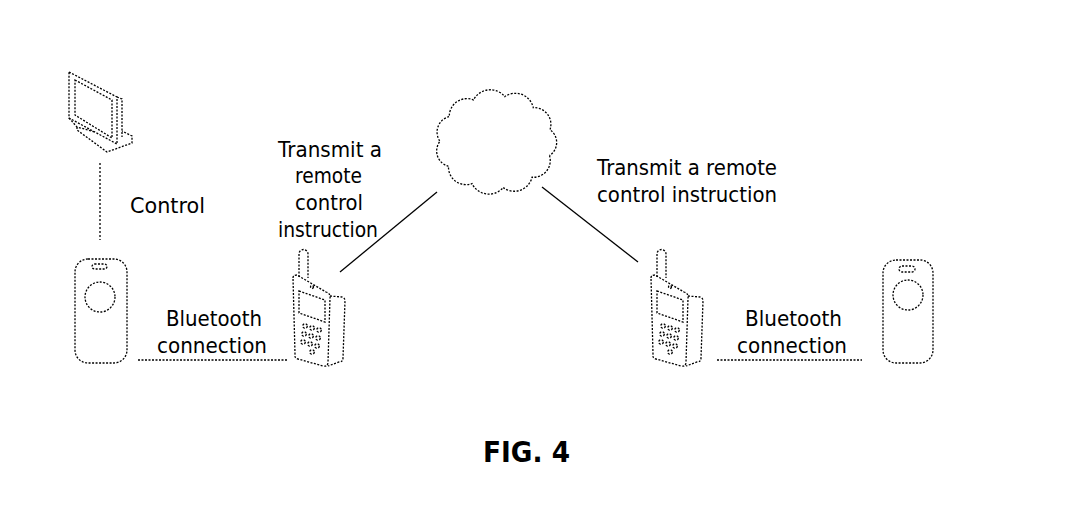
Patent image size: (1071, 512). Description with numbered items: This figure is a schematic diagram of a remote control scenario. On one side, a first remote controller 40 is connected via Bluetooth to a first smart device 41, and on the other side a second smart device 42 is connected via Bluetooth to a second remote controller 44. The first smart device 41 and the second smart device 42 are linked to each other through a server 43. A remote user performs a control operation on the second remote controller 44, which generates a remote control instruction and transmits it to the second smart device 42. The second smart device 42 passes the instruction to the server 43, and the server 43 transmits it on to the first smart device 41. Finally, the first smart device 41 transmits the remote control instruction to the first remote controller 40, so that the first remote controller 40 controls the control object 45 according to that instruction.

The first remote controller 40 is at (110, 273).
The first smart device 41 is at (338, 303).
The second smart device 42 is at (702, 301).
The server 43 is at (520, 95).
The second remote controller 44 is at (923, 277).
The control object 45 is at (100, 78).